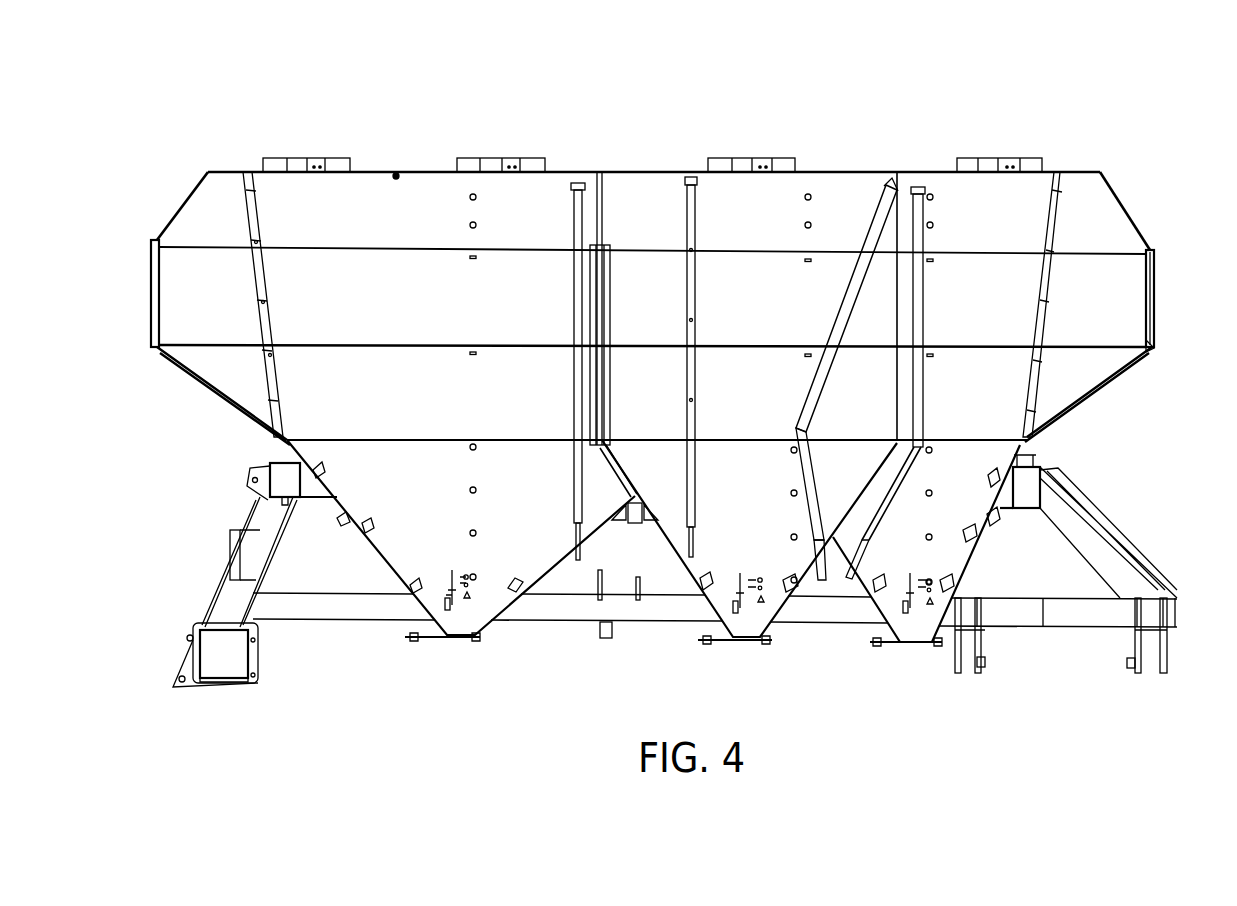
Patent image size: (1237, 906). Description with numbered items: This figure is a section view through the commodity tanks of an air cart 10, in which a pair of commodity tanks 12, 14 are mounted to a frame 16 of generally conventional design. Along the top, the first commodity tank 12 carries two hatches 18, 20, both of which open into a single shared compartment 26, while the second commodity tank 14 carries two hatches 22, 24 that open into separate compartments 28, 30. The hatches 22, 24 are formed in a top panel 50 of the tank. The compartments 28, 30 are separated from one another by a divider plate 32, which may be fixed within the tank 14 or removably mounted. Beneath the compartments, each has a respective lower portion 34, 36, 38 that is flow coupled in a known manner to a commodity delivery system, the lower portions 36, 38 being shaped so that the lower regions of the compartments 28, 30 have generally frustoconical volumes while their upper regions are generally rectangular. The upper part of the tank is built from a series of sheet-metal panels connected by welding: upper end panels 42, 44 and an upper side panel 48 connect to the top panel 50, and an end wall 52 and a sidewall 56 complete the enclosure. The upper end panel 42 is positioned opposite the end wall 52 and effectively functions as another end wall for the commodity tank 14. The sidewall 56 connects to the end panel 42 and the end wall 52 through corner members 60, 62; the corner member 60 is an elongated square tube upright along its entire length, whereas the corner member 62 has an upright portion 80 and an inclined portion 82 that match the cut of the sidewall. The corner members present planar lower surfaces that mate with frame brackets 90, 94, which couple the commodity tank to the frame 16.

The air cart 10 is at (217, 125).
The commodity tank 12 is at (372, 168).
The commodity tank 14 is at (876, 171).
The frame 16 is at (335, 624).
The hatch 18 is at (271, 155).
The hatch 20 is at (475, 155).
The hatch 22 is at (766, 156).
The hatch 24 is at (1014, 157).
The shared compartment 26 is at (393, 274).
The compartment 28 is at (729, 245).
The compartment 30 is at (1009, 246).
The divider plate 32 is at (898, 296).
The lower portion 34 is at (541, 585).
The lower portion 36 is at (795, 580).
The lower portion 38 is at (968, 565).
The upper end panel 42 is at (1125, 213).
The upper end panel 44 is at (603, 202).
The upper side panel 48 is at (827, 197).
The top panel 50 is at (922, 181).
The end wall 52 is at (1157, 282).
The sidewall 56 is at (1082, 322).
The corner member 60 is at (612, 290).
The corner member 62 is at (1159, 321).
The upright portion 80 is at (1152, 343).
The inclined portion 82 is at (1113, 385).
The frame bracket 90 is at (1040, 461).
The frame bracket 94 is at (276, 457).